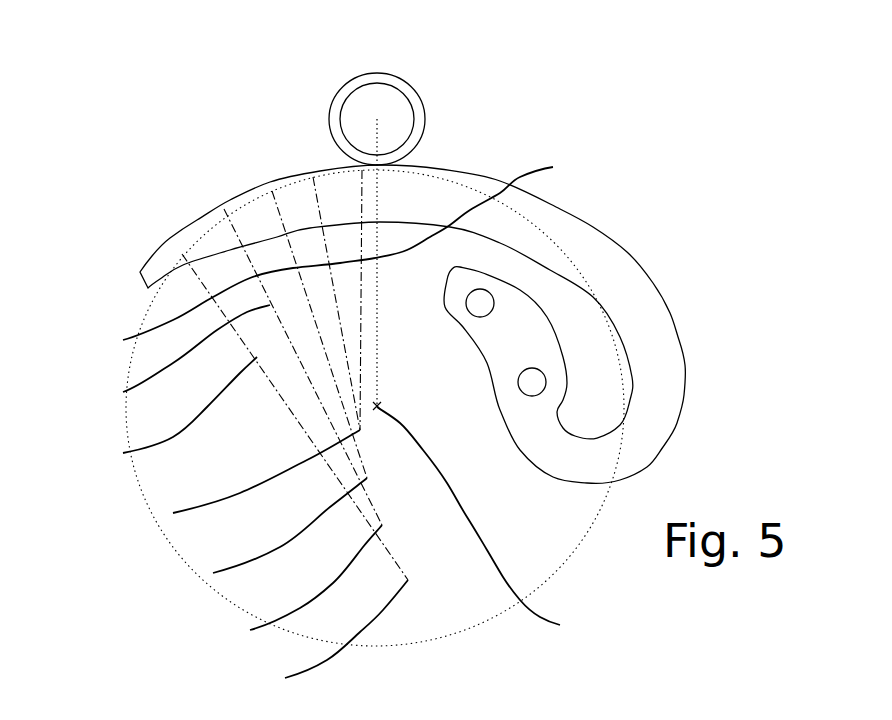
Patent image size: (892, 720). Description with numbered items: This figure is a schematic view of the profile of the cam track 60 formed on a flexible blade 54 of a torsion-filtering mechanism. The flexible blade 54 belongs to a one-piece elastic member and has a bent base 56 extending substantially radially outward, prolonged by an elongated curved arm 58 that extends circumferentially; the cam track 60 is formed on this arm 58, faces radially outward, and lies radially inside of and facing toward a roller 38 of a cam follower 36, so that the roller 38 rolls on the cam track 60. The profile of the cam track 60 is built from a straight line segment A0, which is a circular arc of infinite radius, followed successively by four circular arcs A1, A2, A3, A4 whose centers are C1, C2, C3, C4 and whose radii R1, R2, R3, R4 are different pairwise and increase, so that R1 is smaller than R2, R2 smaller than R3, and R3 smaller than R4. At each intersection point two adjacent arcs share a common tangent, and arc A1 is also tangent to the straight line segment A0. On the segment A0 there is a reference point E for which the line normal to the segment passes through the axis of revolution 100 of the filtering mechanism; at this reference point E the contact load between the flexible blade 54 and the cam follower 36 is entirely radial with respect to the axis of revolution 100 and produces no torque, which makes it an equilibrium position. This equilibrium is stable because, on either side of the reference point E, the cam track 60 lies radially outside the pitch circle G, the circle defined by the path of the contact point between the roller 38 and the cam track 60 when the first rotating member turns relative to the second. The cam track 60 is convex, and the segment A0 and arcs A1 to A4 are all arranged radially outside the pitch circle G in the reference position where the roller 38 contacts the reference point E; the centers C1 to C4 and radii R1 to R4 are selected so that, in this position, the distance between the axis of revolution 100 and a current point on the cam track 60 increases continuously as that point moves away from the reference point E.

The cam follower 36 is at (400, 78).
The roller 38 is at (423, 110).
The reference point E is at (370, 160).
The straight line segment A0 is at (390, 165).
The circular arc A1 is at (337, 167).
The circular arc A2 is at (292, 177).
The circular arc A3 is at (245, 192).
The circular arc A4 is at (198, 220).
The cam track 60 is at (463, 173).
The flexible blade 54 is at (755, 407).
The elongated curved arm 58 is at (650, 357).
The bent base 56 is at (607, 463).
The radius R1 is at (553, 167).
The radius R2 is at (123, 340).
The radius R3 is at (123, 392).
The radius R4 is at (123, 453).
The center C1 is at (173, 513).
The center C2 is at (213, 573).
The center C3 is at (250, 630).
The center C4 is at (285, 678).
The axis of revolution 100 is at (560, 625).
The pitch circle G is at (480, 620).